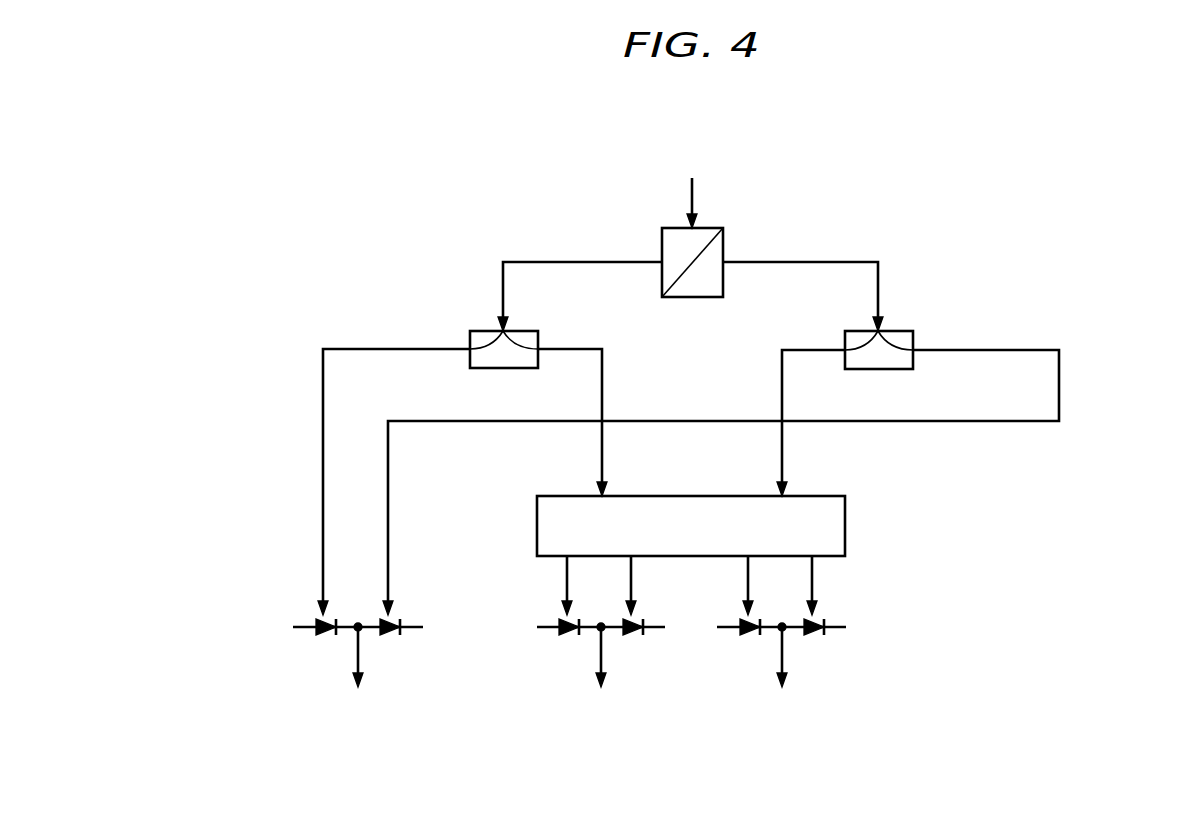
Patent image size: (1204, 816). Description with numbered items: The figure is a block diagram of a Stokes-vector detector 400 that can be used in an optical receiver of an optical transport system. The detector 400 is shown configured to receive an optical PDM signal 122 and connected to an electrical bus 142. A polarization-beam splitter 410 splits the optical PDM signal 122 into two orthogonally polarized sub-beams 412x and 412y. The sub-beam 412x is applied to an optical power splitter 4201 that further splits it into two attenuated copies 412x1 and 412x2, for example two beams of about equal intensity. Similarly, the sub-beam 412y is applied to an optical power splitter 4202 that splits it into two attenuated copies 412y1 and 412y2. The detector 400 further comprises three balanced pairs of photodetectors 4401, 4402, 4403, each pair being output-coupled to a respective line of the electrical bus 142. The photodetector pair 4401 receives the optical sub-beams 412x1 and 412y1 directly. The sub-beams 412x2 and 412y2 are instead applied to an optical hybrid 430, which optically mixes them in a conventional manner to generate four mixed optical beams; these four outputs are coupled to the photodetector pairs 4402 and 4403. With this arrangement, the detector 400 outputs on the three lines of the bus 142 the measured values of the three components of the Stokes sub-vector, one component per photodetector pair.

The Stokes-vector detector 400 is at (708, 106).
The optical PDM signal 122 is at (692, 203).
The polarization-beam splitter 410 is at (660, 281).
The optical sub-beam 412x is at (585, 262).
The optical sub-beam 412y is at (793, 262).
The optical power splitter 4201 is at (470, 339).
The optical power splitter 4202 is at (913, 340).
The optical sub-beam 412x1 is at (323, 385).
The optical sub-beam 412x2 is at (601, 455).
The optical sub-beam 412y1 is at (1059, 385).
The optical sub-beam 412y2 is at (783, 455).
The optical hybrid 430 is at (845, 527).
The balanced pair of photodetectors 4401 is at (320, 668).
The balanced pair of photodetectors 4402 is at (560, 668).
The balanced pair of photodetectors 4403 is at (843, 668).
The electrical bus 142 is at (236, 742).